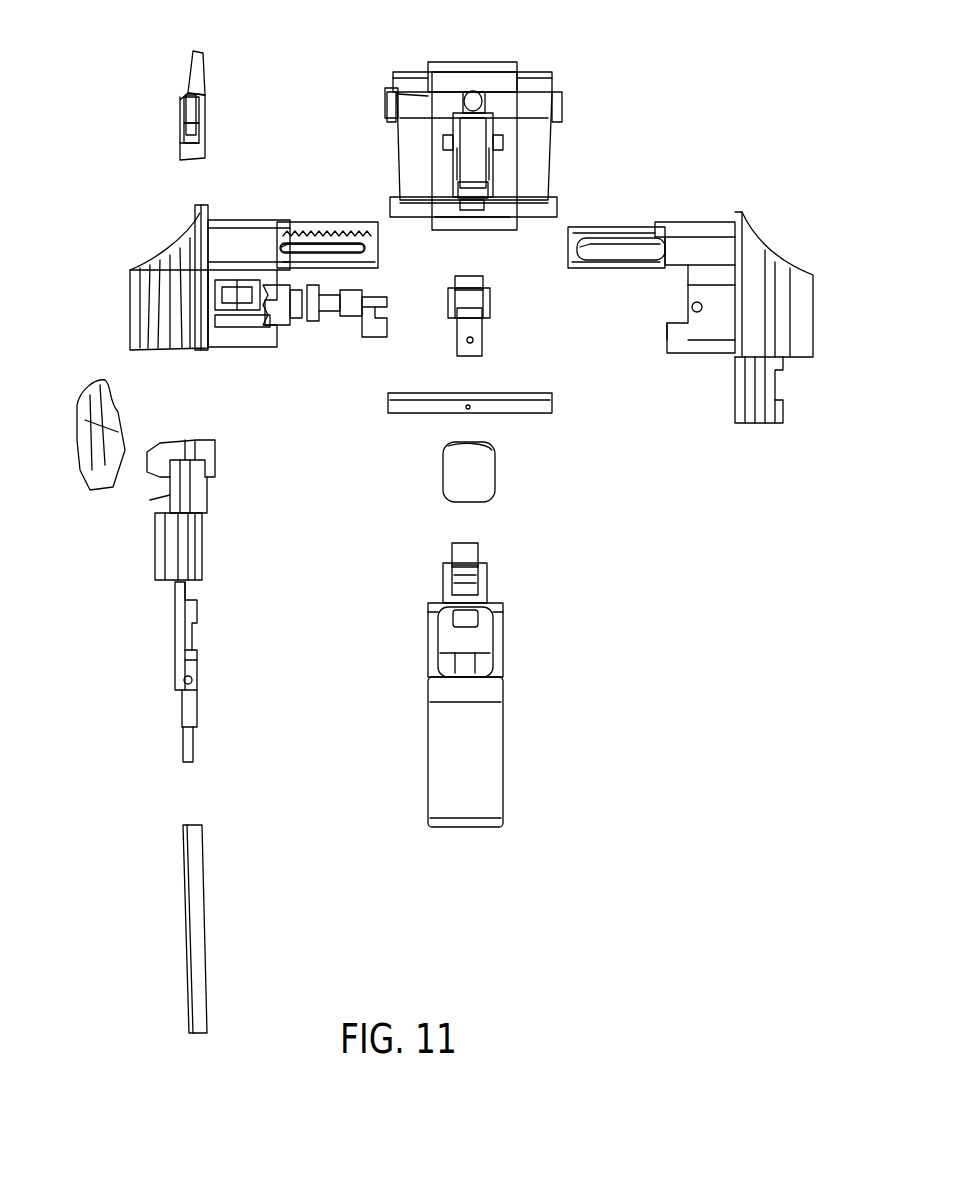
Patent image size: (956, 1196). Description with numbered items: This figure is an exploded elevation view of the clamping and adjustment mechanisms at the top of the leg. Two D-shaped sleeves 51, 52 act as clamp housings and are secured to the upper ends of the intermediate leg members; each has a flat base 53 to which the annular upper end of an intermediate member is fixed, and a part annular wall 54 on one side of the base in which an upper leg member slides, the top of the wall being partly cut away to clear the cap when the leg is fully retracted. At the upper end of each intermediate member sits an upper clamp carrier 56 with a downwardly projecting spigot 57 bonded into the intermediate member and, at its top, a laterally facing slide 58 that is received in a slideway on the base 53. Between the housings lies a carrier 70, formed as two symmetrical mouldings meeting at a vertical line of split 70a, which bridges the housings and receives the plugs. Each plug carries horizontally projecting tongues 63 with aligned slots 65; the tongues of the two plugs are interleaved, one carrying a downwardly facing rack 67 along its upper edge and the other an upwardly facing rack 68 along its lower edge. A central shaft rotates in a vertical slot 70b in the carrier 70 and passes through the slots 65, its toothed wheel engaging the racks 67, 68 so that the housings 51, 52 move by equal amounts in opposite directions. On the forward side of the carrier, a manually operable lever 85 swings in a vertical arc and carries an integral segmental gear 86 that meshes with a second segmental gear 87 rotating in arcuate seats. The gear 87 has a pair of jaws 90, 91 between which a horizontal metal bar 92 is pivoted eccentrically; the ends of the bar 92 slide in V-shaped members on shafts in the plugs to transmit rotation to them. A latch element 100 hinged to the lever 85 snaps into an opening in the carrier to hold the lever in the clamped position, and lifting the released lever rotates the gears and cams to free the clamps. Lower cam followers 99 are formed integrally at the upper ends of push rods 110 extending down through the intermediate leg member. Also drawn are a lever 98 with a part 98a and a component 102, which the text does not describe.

The sleeve 51 is at (145, 258).
The sleeve 52 is at (695, 213).
The flat base 53 is at (197, 222).
The part annular wall 54 is at (130, 318).
The upper clamp carrier 56 is at (207, 490).
The spigot 57 is at (202, 548).
The slide 58 is at (215, 462).
The tongue 63 is at (300, 222).
The slot 65 is at (380, 248).
The rack 67 is at (365, 250).
The rack 68 is at (617, 275).
The carrier 70 is at (412, 55).
The line of split 70a is at (475, 64).
The slot 70b is at (400, 96).
The manually operable lever 85 is at (505, 778).
The segmental gear 86 is at (480, 546).
The second segmental gear 87 is at (470, 278).
The jaw 90 is at (488, 328).
The jaw 91 is at (450, 300).
The metal bar 92 is at (555, 398).
The lever 98 is at (191, 93).
The lever pivot 98a is at (205, 128).
The lower cam follower 99 is at (175, 637).
The latch element 100 is at (495, 478).
The battery retainer 102 is at (505, 635).
The push rod 110 is at (188, 960).